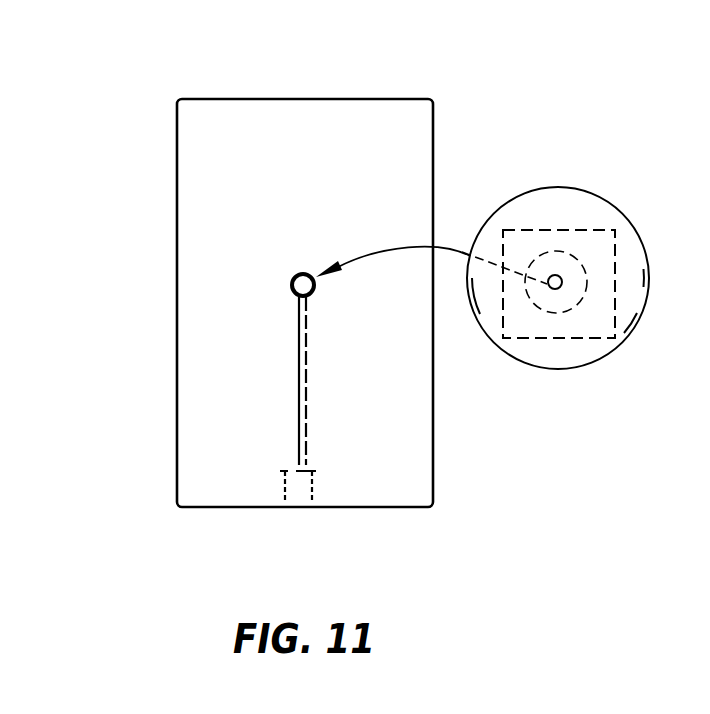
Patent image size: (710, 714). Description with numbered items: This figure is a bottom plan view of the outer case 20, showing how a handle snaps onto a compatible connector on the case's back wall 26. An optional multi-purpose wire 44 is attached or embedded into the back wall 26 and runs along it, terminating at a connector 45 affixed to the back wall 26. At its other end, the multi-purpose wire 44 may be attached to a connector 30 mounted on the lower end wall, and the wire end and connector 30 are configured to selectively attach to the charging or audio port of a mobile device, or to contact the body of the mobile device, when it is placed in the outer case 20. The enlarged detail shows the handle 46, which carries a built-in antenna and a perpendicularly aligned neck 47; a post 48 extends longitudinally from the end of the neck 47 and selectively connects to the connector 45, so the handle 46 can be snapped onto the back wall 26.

The outer case 20 is at (166, 108).
The back wall 26 is at (369, 158).
The connector 30 is at (286, 482).
The multi-purpose wire 44 is at (297, 378).
The connector 45 is at (292, 274).
The handle 46 is at (557, 326).
The neck 47 is at (567, 252).
The post 48 is at (563, 287).